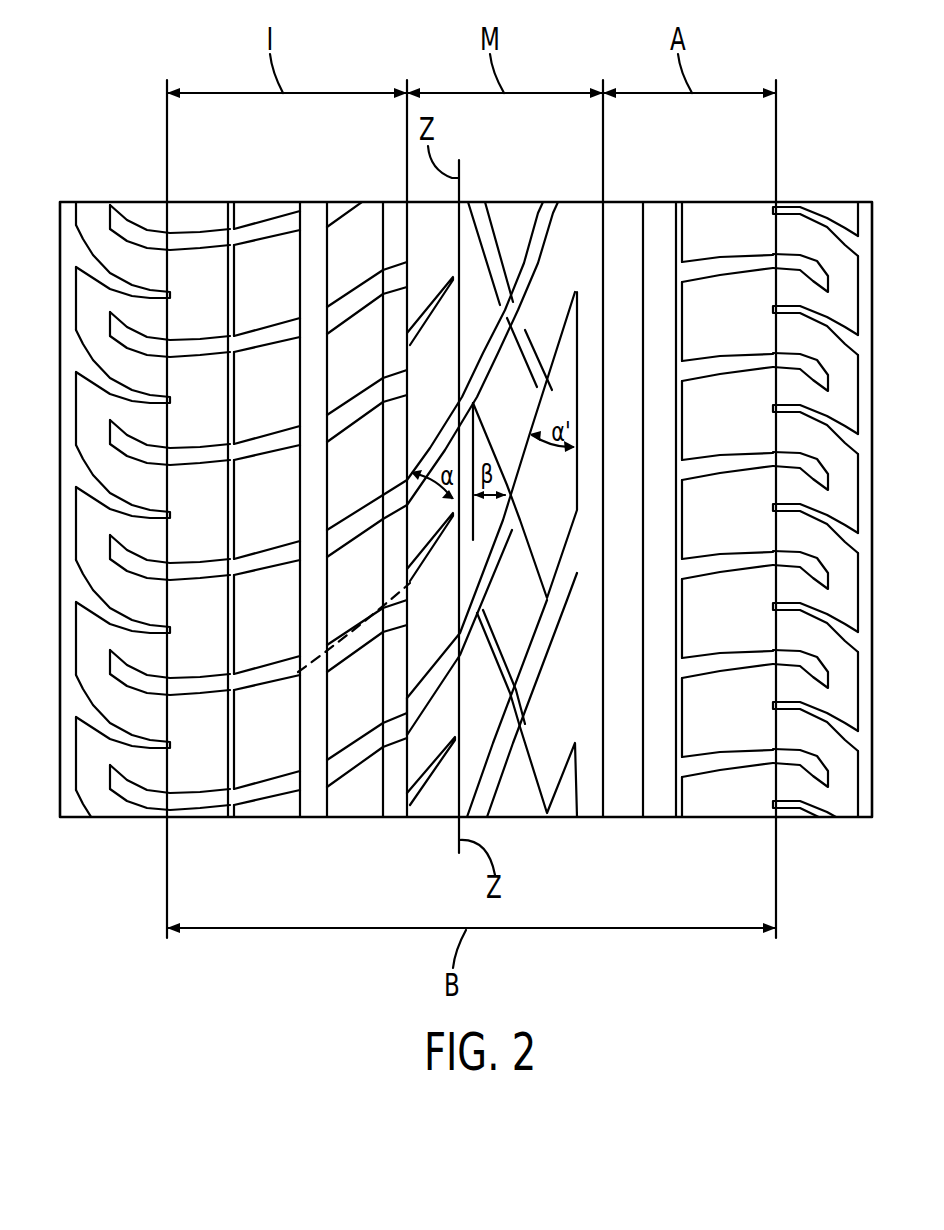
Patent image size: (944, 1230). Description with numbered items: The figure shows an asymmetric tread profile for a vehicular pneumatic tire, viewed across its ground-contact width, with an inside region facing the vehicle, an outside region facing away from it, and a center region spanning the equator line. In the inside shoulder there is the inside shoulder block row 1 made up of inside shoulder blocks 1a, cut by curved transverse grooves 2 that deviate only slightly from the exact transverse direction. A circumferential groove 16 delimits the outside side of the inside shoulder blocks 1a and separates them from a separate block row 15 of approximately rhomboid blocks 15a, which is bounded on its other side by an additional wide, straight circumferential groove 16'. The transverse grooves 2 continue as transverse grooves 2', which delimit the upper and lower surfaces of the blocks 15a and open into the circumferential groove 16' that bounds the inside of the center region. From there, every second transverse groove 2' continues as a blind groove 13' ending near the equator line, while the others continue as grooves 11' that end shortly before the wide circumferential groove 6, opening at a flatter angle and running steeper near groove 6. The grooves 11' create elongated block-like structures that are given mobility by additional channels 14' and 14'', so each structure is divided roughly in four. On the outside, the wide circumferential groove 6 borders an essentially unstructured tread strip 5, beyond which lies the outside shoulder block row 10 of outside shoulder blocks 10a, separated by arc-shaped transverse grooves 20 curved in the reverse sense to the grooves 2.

The inside shoulder block row 1 is at (201, 185).
The inside shoulder blocks 1a is at (256, 208).
The transverse grooves 2 is at (205, 524).
The transverse grooves 2' is at (342, 220).
The tread strip 5 is at (662, 217).
The wide circumferential groove 6 is at (630, 217).
The outside shoulder block row 10 is at (715, 833).
The outside shoulder blocks 10a is at (758, 800).
The grooves 11' is at (470, 333).
The blind groove 13' is at (431, 807).
The channel 14' is at (527, 713).
The channel 14'' is at (523, 513).
The block row 15 is at (355, 832).
The rhomboid blocks 15a is at (350, 720).
The circumferential groove 16 is at (307, 540).
The wide circumferential groove 16' is at (385, 482).
The transverse grooves 20 is at (743, 263).